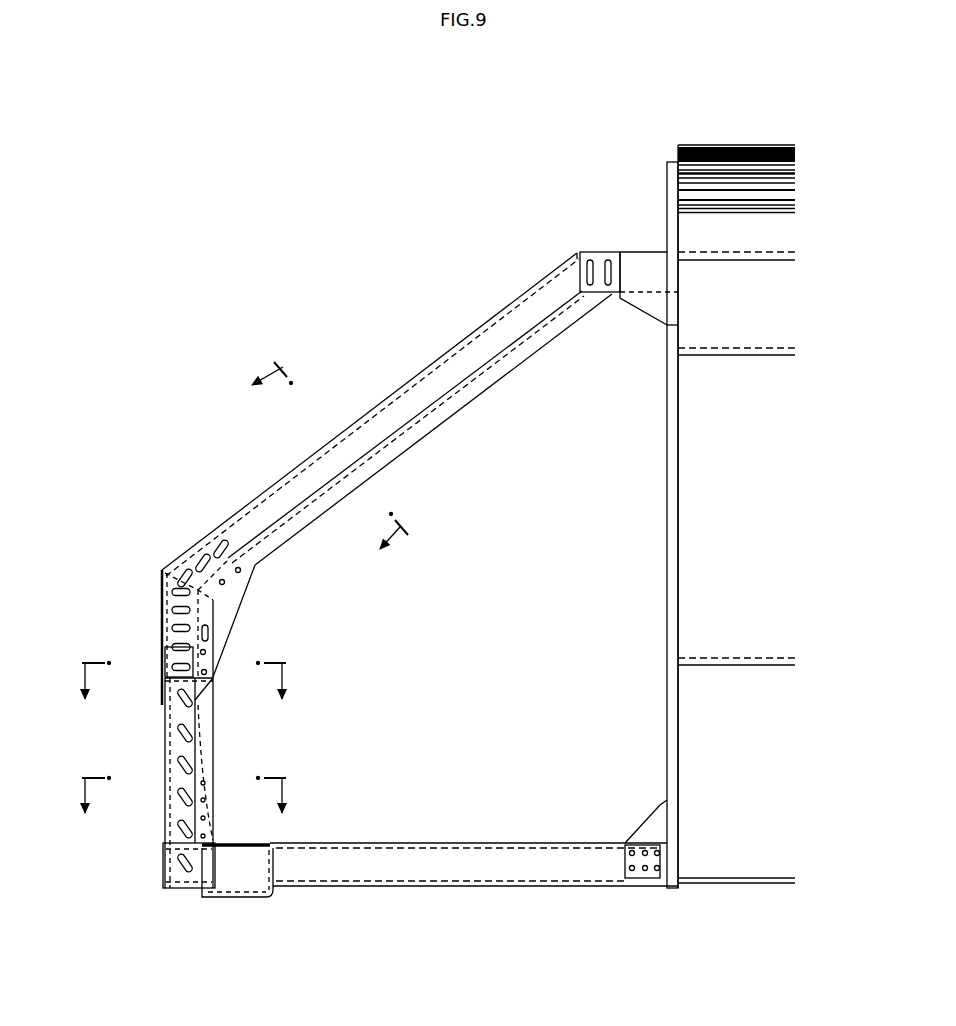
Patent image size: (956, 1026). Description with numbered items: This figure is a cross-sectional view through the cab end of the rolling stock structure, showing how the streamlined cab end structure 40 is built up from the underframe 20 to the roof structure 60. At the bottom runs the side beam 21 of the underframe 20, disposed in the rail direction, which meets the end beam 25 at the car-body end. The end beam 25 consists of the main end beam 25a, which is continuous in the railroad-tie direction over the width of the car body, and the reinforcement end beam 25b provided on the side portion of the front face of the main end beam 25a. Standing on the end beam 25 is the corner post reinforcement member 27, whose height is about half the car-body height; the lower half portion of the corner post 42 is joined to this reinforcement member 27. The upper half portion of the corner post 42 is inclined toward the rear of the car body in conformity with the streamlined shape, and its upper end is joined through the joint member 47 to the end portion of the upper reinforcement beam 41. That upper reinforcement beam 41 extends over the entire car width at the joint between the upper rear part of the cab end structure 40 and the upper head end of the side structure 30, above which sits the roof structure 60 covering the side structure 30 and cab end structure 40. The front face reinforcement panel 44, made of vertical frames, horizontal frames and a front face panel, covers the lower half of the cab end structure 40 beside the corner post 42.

The underframe 20 is at (548, 890).
The side beam 21 is at (466, 852).
The end beam 25 is at (233, 900).
The main end beam 25a is at (268, 896).
The reinforcement end beam 25b is at (181, 889).
The corner post reinforcement member 27 is at (250, 843).
The side structure 30 is at (658, 586).
The cab end structure 40 is at (483, 115).
The upper reinforcement beam 41 is at (648, 262).
The corner post 42 is at (461, 330).
The front face reinforcement panel 44 is at (162, 628).
The joint member 47 is at (596, 252).
The roof structure 60 is at (689, 140).